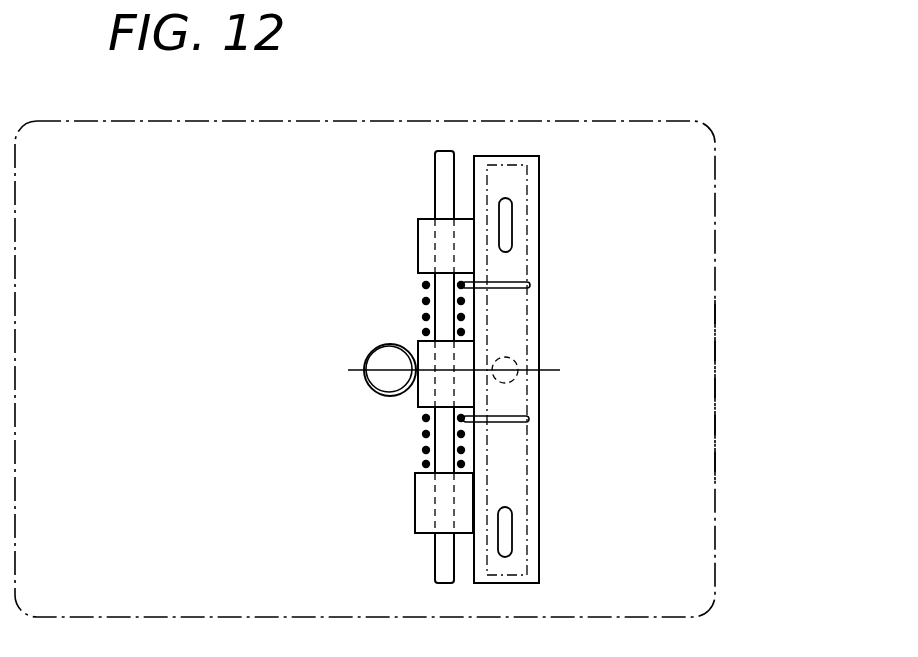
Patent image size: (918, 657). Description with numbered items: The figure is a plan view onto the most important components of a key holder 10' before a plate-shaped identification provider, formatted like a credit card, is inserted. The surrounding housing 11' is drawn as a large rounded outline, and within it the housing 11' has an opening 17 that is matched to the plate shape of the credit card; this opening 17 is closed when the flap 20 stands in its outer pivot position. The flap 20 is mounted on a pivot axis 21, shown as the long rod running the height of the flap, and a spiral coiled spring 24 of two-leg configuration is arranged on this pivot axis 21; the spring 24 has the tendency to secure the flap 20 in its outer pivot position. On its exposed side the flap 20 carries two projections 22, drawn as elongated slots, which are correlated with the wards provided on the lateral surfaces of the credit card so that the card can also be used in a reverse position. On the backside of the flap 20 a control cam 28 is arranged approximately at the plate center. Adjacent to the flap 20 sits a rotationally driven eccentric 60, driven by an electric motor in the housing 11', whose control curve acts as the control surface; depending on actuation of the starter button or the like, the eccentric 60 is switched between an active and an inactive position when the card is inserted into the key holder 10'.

The key holder 10' is at (407, 324).
The housing 11' is at (764, 390).
The opening 17 is at (527, 476).
The flap 20 is at (532, 183).
The pivot axis 21 is at (446, 168).
The projections 22 is at (505, 233).
The spiral coiled spring 24 is at (420, 285).
The control cam 28 is at (517, 355).
The eccentric 60 is at (393, 380).